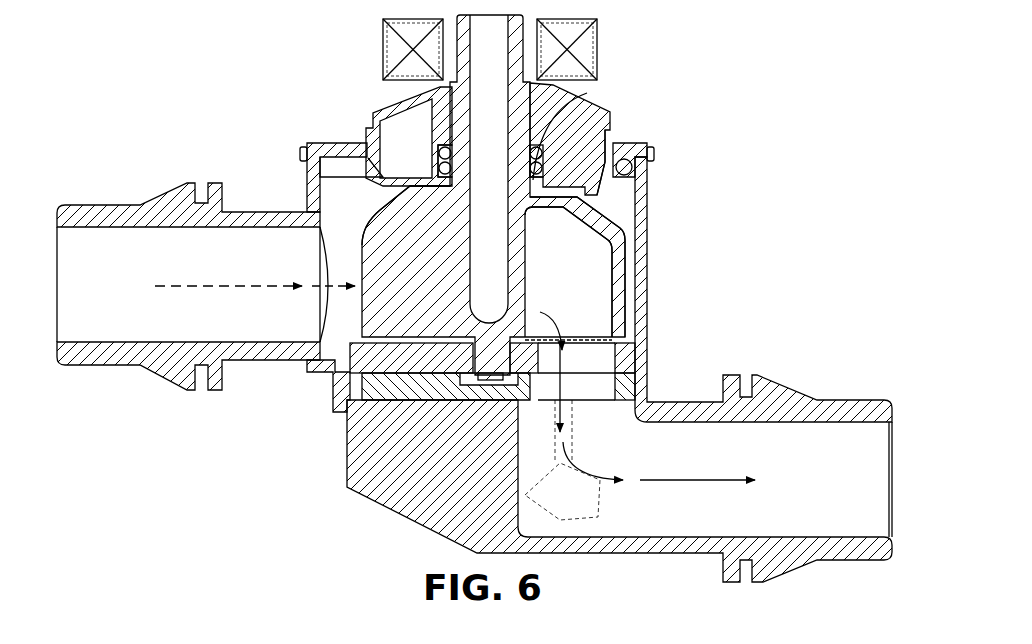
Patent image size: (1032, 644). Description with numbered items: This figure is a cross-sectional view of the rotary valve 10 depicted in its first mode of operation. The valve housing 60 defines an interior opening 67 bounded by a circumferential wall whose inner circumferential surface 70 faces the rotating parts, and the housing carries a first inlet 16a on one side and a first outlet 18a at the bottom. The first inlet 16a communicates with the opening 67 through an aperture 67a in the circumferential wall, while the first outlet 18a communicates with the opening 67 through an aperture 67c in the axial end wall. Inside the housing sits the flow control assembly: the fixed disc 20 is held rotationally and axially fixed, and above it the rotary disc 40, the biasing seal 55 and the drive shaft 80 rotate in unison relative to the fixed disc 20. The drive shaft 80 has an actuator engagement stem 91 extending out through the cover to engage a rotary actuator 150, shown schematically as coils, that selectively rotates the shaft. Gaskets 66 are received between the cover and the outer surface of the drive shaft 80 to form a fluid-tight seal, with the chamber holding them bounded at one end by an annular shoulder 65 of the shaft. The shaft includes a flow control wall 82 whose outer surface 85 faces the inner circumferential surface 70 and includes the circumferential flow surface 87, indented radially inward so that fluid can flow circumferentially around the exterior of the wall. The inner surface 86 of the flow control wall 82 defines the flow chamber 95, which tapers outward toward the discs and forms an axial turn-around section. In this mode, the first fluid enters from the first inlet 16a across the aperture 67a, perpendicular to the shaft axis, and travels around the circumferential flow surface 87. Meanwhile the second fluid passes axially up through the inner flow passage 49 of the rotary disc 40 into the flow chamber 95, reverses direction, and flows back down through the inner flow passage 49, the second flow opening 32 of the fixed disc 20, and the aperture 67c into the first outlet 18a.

The rotary valve 10 is at (205, 86).
The rotary actuator 150 is at (383, 50).
The actuator engagement stem 91 is at (471, 28).
The drive shaft 80 is at (545, 133).
The annular shoulder 65 is at (592, 152).
The first inlet 16a is at (100, 205).
The valve housing 60 is at (293, 200).
The gaskets 66 is at (440, 165).
The circumferential flow surface 87 is at (380, 218).
The outer surface 85 is at (600, 212).
The flow control wall 82 is at (618, 237).
The inner circumferential surface 70 is at (630, 257).
The opening 67 is at (632, 278).
The inner surface 86 is at (598, 220).
The flow chamber 95 is at (585, 295).
The biasing seal 55 is at (622, 338).
The inner flow passage 49 is at (590, 357).
The second flow opening 32 is at (590, 383).
The aperture 67a is at (327, 278).
The rotary disc 40 is at (348, 365).
The fixed disc 20 is at (347, 410).
The aperture 67c is at (583, 403).
The first outlet 18a is at (817, 400).